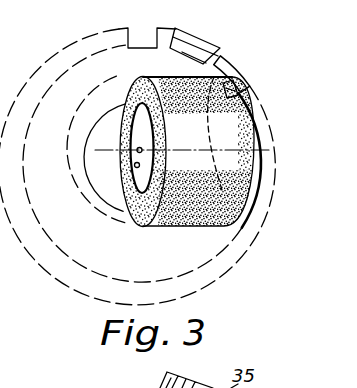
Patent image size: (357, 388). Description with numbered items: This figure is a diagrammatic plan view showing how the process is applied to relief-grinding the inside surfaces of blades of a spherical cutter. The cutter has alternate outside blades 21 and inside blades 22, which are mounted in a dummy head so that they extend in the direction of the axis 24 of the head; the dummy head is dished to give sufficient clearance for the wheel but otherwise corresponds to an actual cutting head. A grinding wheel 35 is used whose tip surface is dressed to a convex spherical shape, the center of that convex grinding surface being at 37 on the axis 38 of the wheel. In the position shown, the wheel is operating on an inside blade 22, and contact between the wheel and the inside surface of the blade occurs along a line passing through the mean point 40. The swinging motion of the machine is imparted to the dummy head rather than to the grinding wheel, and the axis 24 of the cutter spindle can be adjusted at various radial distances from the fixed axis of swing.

The outside blade 21 is at (190, 42).
The inside blade 22 is at (238, 68).
The axis of the head 24 is at (134, 166).
The grinding wheel 35 is at (210, 175).
The center of the convex grinding surface 37 is at (140, 147).
The axis of the wheel 38 is at (178, 150).
The mean point 40 is at (233, 98).